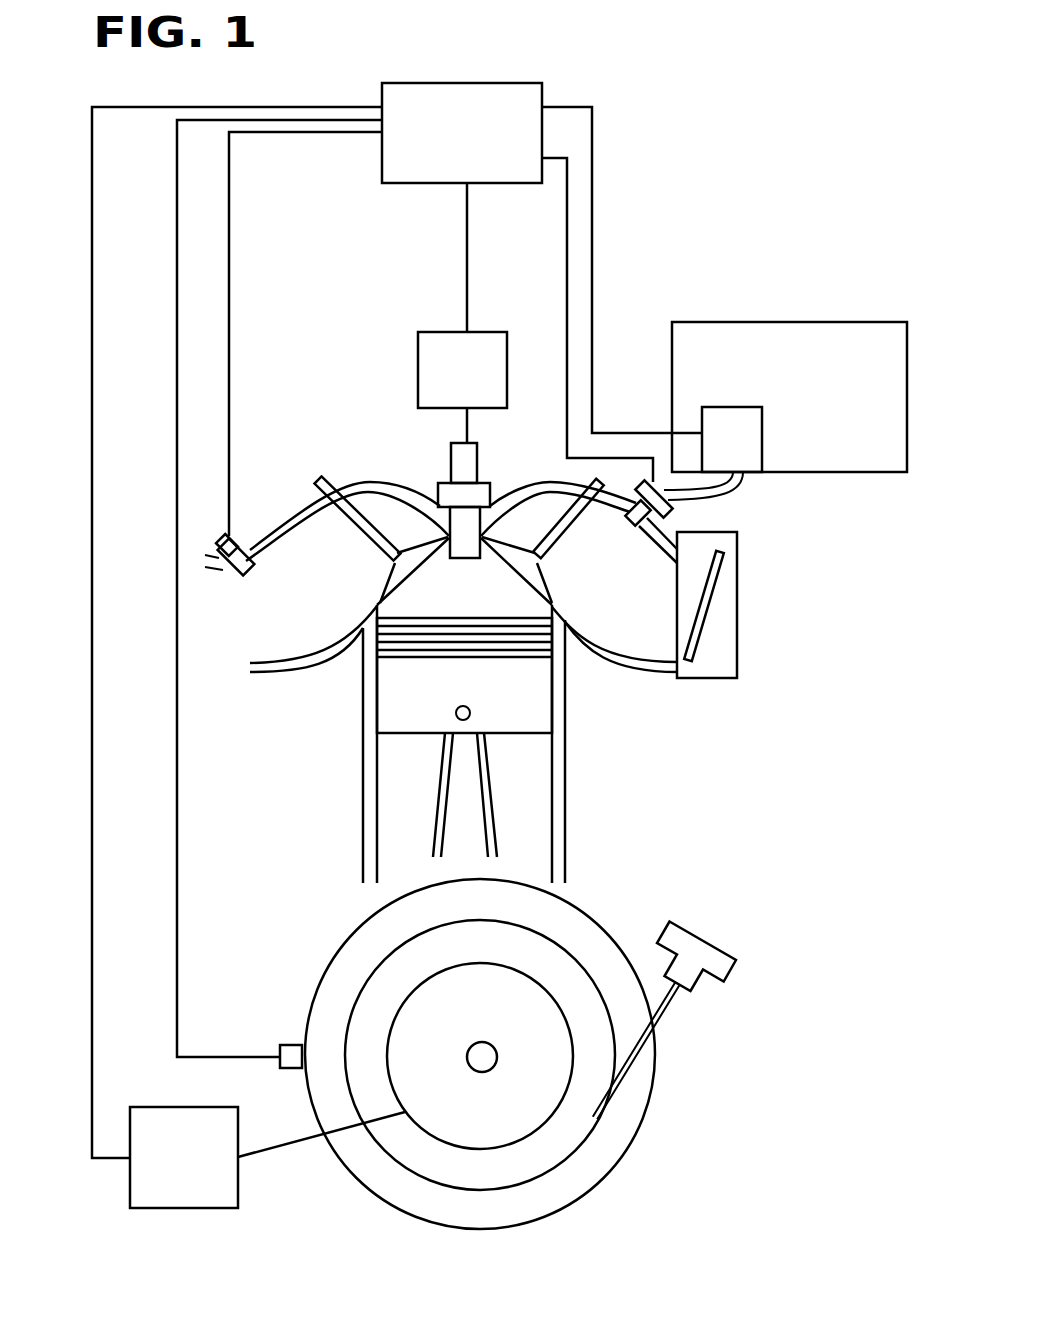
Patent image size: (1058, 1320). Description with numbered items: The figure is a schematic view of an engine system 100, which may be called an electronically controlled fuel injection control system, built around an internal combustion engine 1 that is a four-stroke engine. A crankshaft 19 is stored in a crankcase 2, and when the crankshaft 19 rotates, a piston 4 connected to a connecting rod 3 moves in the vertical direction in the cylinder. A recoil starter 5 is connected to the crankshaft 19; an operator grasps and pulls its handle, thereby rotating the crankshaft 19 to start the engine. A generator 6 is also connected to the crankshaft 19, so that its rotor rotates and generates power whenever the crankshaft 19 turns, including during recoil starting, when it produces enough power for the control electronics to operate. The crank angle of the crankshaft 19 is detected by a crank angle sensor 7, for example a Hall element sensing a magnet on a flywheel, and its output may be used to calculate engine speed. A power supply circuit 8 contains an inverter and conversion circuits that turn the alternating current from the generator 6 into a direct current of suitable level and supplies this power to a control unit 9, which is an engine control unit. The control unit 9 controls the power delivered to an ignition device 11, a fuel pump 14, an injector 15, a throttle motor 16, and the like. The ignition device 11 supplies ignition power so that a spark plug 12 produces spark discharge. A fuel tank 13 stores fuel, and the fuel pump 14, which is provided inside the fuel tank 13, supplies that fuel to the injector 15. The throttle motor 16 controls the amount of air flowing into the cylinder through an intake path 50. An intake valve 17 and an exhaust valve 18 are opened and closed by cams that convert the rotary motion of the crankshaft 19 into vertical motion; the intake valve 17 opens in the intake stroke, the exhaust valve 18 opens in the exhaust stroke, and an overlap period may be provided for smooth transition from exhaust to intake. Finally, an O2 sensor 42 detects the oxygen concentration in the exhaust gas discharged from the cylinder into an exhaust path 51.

The engine system 100 is at (734, 55).
The internal combustion engine 1 is at (602, 791).
The crankcase 2 is at (367, 920).
The connecting rod 3 is at (457, 793).
The piston 4 is at (392, 708).
The recoil starter 5 is at (690, 928).
The generator 6 is at (517, 1112).
The crank angle sensor 7 is at (290, 1043).
The power supply circuit 8 is at (170, 1107).
The control unit 9 is at (525, 85).
The ignition device 11 is at (493, 337).
The spark plug 12 is at (450, 481).
The fuel tank 13 is at (855, 322).
The fuel pump 14 is at (735, 407).
The injector 15 is at (672, 508).
The throttle motor 16 is at (737, 578).
The intake valve 17 is at (560, 520).
The exhaust valve 18 is at (325, 478).
The crankshaft 19 is at (490, 1040).
The O2 sensor 42 is at (226, 543).
The intake path 50 is at (617, 587).
The exhaust path 51 is at (315, 570).